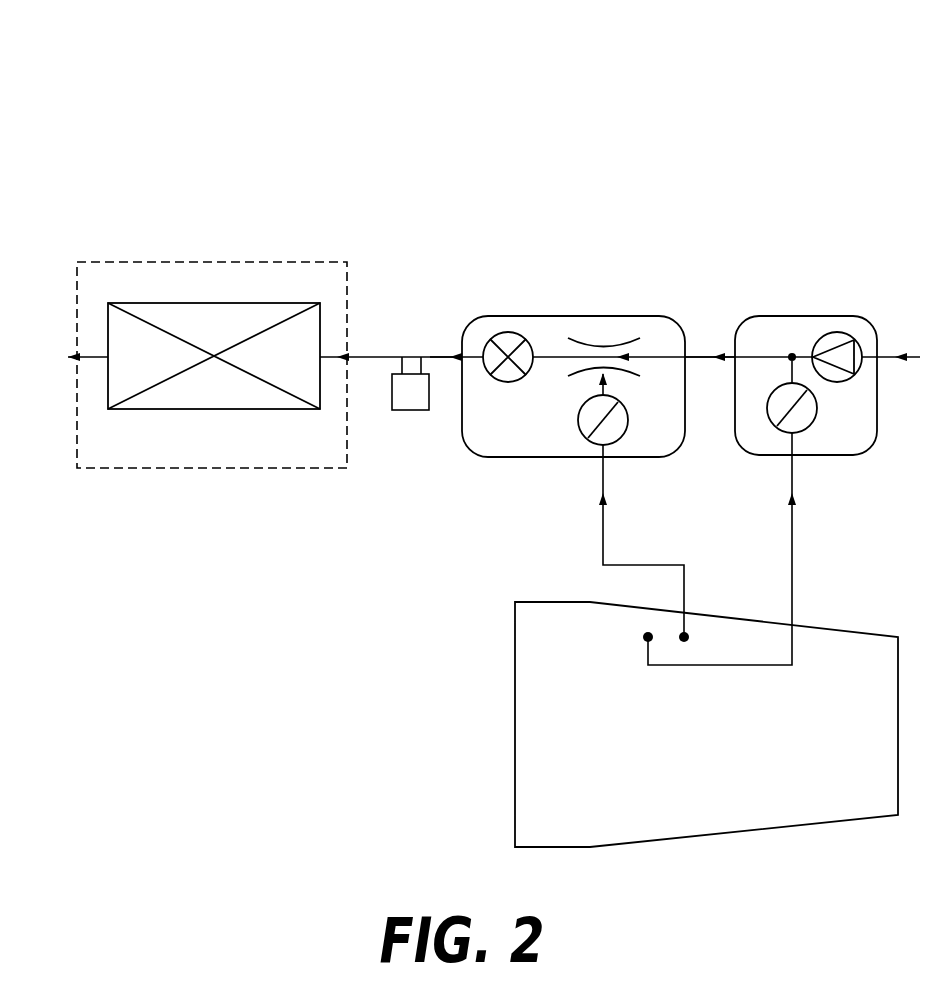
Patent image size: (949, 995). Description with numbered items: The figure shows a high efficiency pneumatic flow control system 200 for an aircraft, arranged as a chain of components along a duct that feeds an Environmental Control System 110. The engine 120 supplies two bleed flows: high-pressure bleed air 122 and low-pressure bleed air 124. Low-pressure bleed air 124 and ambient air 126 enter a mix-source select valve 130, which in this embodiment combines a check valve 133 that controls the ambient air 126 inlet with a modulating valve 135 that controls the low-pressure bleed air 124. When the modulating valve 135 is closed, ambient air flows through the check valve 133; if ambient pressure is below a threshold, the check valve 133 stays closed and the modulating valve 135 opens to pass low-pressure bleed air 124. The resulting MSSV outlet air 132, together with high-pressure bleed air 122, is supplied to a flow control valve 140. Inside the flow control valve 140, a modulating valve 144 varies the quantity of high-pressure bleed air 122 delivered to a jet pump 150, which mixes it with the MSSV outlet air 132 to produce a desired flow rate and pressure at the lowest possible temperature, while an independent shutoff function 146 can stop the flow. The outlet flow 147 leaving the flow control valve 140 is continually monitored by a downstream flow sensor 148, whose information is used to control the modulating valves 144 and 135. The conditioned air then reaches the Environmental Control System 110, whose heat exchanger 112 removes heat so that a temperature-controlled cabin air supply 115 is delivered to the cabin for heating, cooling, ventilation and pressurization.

The high efficiency pneumatic flow control system 200 is at (145, 124).
The Environmental Control System 110 is at (193, 262).
The heat exchanger 112 is at (210, 409).
The cabin air supply 115 is at (64, 356).
The outlet flow 147 is at (452, 352).
The flow sensor 148 is at (408, 410).
The flow control valve 140 is at (550, 316).
The shutoff function 146 is at (507, 382).
The jet pump 150 is at (598, 348).
The modulating valve 144 is at (578, 420).
The high-pressure bleed air 122 is at (605, 525).
The low-pressure bleed air 124 is at (793, 532).
The MSSV outlet air 132 is at (713, 353).
The mix-source select valve 130 is at (775, 316).
The check valve 133 is at (840, 332).
The modulating valve 135 is at (815, 413).
The ambient air 126 is at (897, 353).
The engine 120 is at (733, 802).